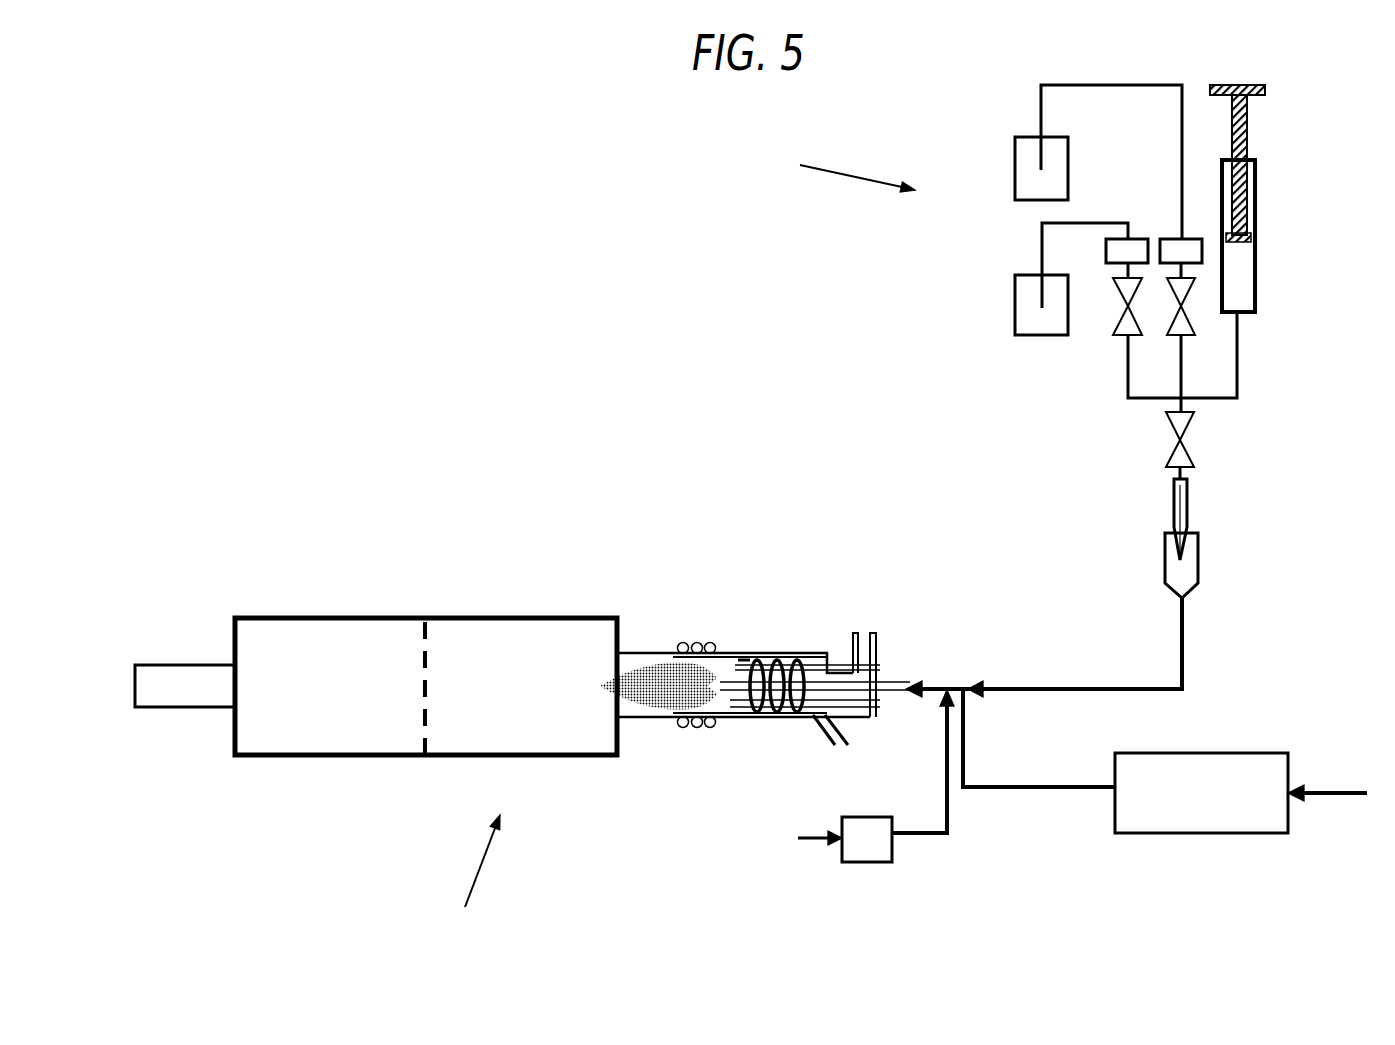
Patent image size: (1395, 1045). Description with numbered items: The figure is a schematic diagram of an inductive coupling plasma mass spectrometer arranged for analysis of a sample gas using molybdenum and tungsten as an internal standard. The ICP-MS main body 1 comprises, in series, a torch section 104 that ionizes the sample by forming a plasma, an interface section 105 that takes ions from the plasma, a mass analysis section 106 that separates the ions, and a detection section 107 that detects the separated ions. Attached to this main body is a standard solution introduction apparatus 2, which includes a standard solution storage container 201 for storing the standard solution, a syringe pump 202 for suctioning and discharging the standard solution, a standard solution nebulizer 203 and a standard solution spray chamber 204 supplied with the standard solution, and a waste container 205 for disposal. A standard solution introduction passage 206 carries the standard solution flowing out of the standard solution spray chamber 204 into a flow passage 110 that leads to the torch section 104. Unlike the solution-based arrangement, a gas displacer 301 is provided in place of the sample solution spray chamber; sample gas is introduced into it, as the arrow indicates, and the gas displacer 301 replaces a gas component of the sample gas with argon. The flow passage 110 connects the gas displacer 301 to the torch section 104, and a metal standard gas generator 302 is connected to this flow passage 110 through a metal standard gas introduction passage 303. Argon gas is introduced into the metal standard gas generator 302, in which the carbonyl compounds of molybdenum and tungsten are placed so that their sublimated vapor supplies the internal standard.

The ICP-MS main body 1 is at (481, 878).
The standard solution introduction apparatus 2 is at (1010, 317).
The torch section 104 is at (728, 653).
The interface section 105 is at (510, 618).
The mass analysis section 106 is at (283, 618).
The detection section 107 is at (150, 665).
The flow passage 110 is at (965, 748).
The standard solution storage container 201 is at (1014, 152).
The syringe pump 202 is at (1258, 208).
The standard solution nebulizer 203 is at (1190, 492).
The standard solution spray chamber 204 is at (1200, 565).
The waste container 205 is at (1014, 300).
The standard solution introduction passage 206 is at (1035, 685).
The gas displacer 301 is at (1245, 833).
The metal standard gas generator 302 is at (892, 850).
The metal standard gas introduction passage 303 is at (945, 752).